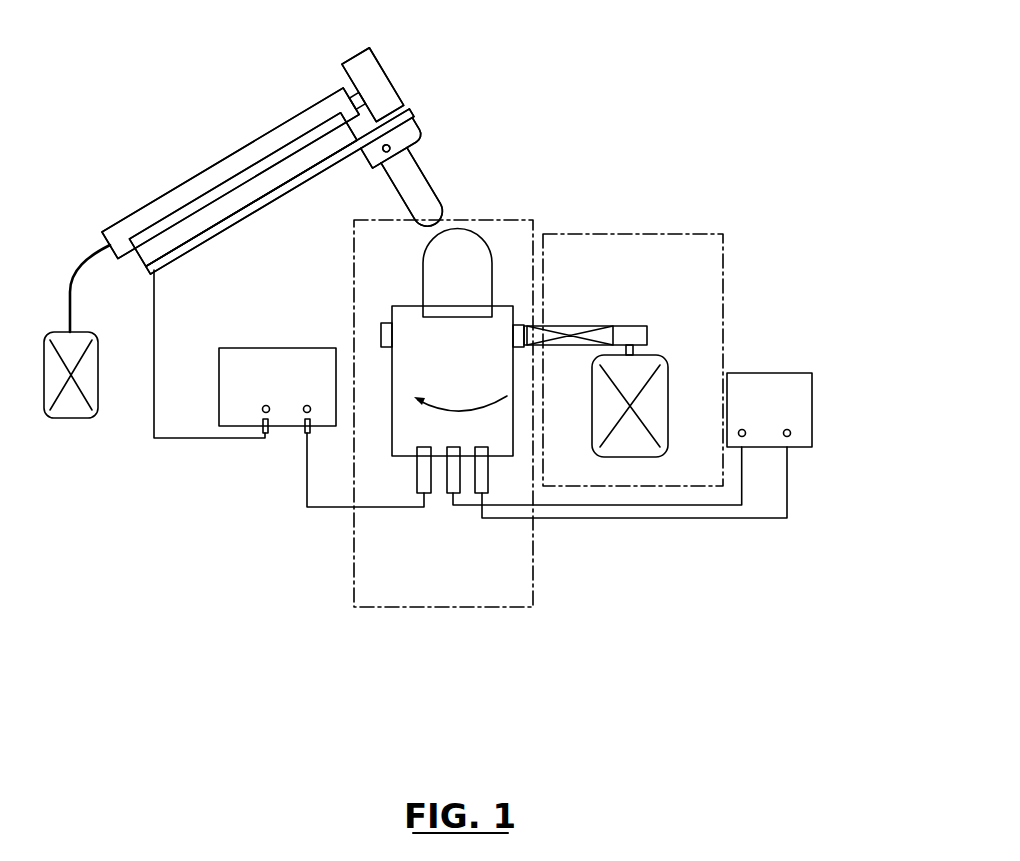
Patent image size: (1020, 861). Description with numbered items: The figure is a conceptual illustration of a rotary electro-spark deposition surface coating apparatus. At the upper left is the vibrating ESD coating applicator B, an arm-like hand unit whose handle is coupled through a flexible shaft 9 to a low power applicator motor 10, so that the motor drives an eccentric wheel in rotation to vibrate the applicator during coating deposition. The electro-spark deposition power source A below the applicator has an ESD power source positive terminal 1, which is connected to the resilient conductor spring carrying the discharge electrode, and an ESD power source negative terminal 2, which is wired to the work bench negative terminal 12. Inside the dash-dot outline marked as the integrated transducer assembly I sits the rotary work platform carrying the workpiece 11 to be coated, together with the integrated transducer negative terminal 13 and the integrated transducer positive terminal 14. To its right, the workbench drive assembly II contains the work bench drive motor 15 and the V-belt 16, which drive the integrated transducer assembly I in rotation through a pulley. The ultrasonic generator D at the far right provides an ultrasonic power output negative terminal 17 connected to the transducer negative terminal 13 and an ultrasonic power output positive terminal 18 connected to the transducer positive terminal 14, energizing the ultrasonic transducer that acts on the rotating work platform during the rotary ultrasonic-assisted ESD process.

The ESD power source positive terminal 1 is at (262, 407).
The ESD power source negative terminal 2 is at (307, 405).
The flexible shaft 9 is at (68, 285).
The low power applicator motor 10 is at (67, 420).
The workpiece 11 is at (478, 255).
The work bench negative terminal 12 is at (420, 487).
The integrated transducer negative terminal 13 is at (450, 480).
The integrated transducer positive terminal 14 is at (475, 483).
The work bench drive motor 15 is at (672, 382).
The V-belt 16 is at (582, 325).
The ultrasonic power output negative terminal 17 is at (746, 435).
The ultrasonic power output positive terminal 18 is at (792, 435).
The electro-spark deposition power source A is at (257, 353).
The vibrating ESD coating applicator B is at (279, 191).
The ultrasonic generator D is at (818, 455).
The integrated transducer assembly I is at (442, 607).
The workbench drive assembly II is at (723, 259).